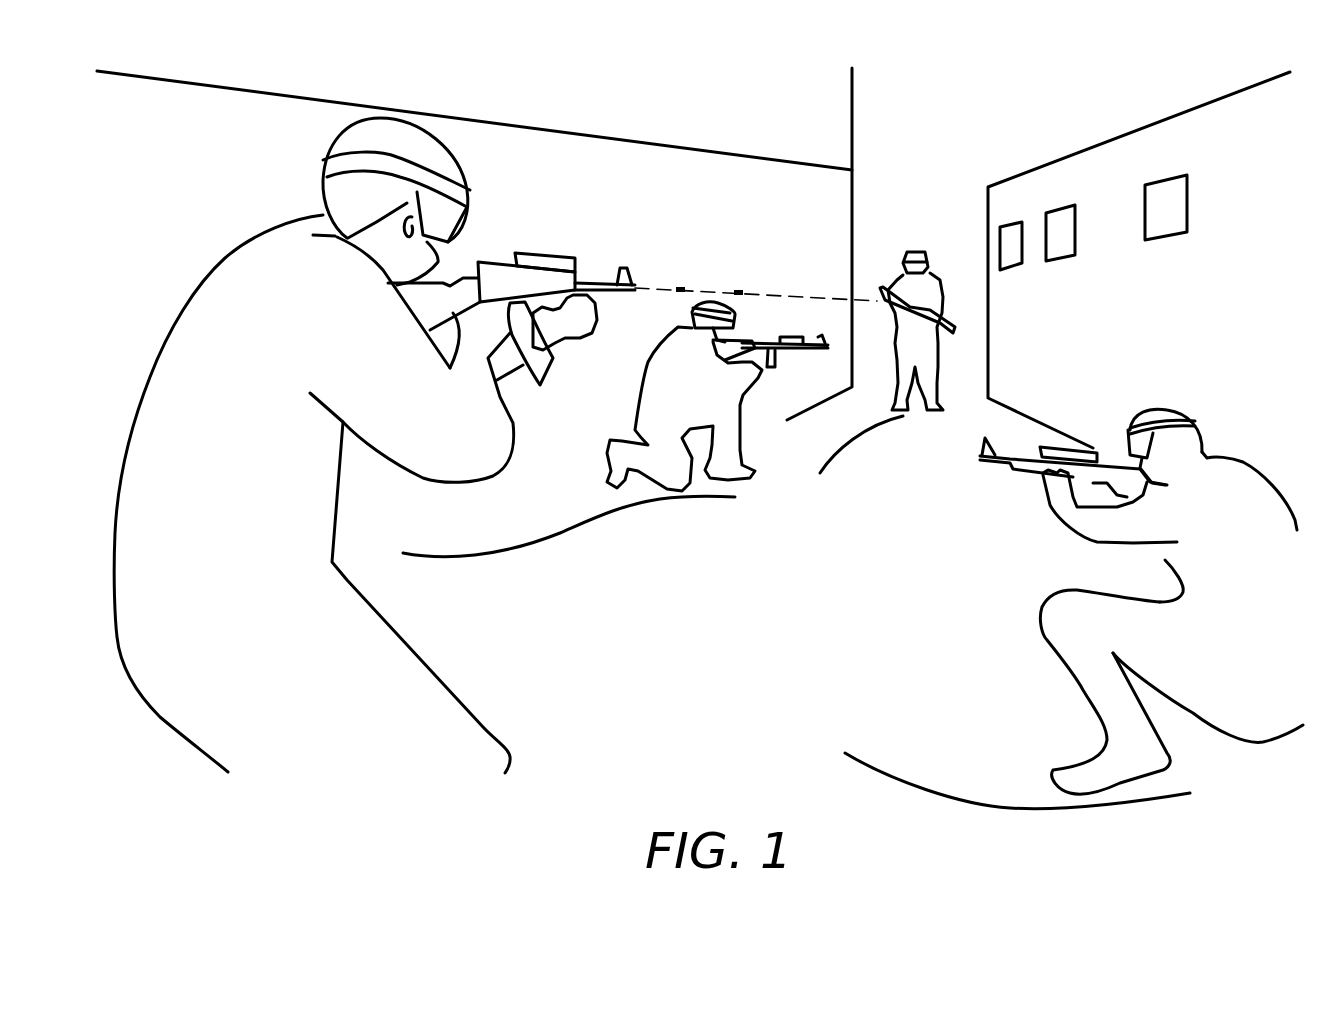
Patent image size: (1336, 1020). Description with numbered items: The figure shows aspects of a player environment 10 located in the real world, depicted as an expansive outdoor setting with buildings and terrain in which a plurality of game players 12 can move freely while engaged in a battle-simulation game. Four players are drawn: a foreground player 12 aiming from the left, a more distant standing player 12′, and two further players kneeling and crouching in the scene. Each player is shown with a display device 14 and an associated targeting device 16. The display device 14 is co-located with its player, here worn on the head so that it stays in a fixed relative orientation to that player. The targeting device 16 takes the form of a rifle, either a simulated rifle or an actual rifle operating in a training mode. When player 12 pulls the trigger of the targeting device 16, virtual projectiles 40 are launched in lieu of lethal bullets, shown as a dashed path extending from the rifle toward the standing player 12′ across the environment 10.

The player environment 10 is at (1026, 121).
The game player 12 is at (177, 318).
The game player 12′ is at (943, 307).
The display device 14 is at (471, 198).
The targeting device 16 is at (500, 260).
The virtual projectiles 40 is at (740, 290).